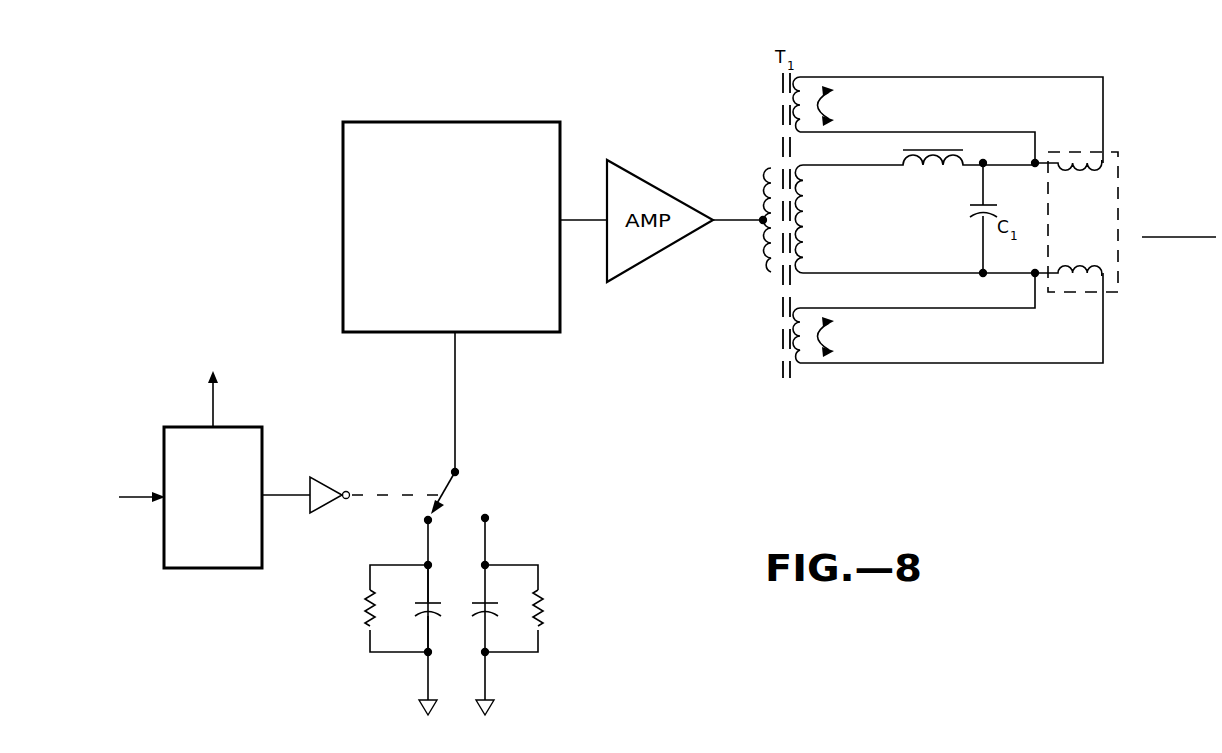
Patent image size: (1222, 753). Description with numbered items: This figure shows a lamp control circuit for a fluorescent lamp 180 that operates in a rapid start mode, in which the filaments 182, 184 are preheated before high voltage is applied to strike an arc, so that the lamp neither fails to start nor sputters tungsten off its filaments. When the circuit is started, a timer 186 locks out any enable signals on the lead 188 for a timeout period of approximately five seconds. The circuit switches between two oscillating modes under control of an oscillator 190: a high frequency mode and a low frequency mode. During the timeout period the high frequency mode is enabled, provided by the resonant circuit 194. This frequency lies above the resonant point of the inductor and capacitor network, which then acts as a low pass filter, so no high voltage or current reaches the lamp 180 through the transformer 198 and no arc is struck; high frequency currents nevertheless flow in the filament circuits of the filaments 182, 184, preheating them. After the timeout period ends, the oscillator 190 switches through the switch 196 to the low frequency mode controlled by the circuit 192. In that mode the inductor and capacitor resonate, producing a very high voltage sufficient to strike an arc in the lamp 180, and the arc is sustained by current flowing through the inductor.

The lamp 180 is at (1186, 238).
The filament 182 is at (795, 68).
The filament 184 is at (802, 374).
The timer 186 is at (206, 568).
The lead 188 is at (130, 500).
The oscillator 190 is at (473, 121).
The circuit 192 is at (389, 663).
The resonant circuit 194 is at (506, 661).
The switch 196 is at (463, 494).
The transformer 198 is at (765, 264).